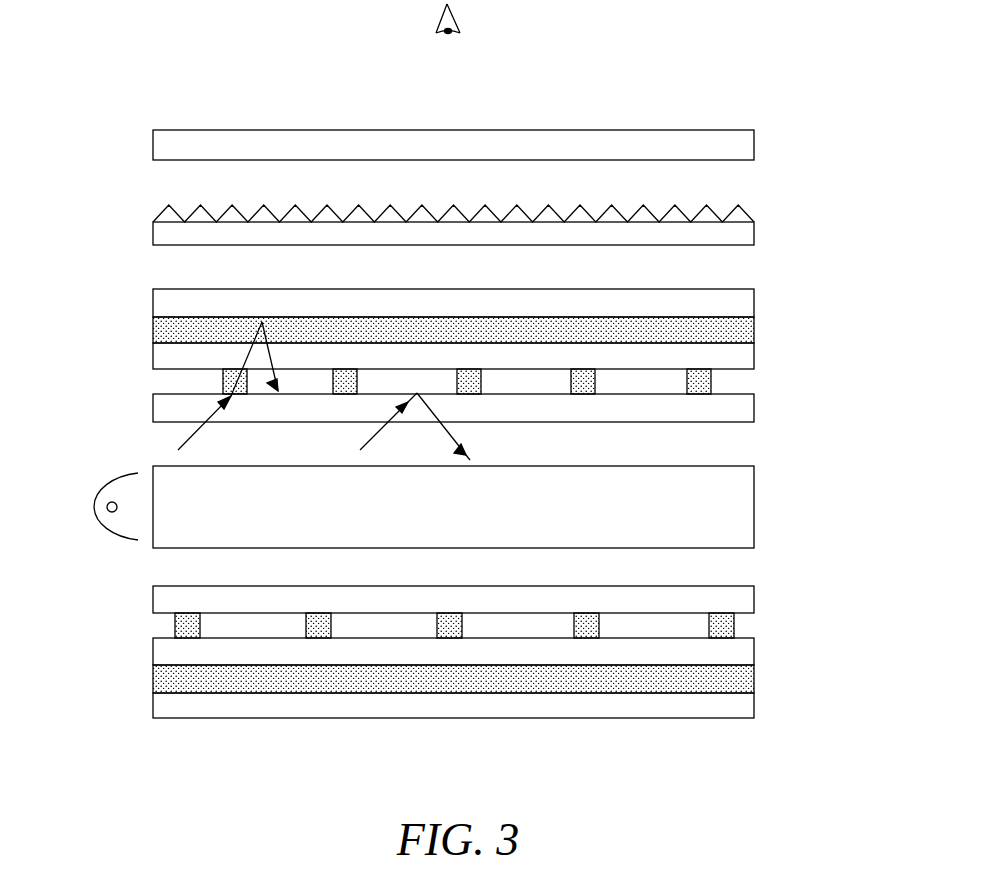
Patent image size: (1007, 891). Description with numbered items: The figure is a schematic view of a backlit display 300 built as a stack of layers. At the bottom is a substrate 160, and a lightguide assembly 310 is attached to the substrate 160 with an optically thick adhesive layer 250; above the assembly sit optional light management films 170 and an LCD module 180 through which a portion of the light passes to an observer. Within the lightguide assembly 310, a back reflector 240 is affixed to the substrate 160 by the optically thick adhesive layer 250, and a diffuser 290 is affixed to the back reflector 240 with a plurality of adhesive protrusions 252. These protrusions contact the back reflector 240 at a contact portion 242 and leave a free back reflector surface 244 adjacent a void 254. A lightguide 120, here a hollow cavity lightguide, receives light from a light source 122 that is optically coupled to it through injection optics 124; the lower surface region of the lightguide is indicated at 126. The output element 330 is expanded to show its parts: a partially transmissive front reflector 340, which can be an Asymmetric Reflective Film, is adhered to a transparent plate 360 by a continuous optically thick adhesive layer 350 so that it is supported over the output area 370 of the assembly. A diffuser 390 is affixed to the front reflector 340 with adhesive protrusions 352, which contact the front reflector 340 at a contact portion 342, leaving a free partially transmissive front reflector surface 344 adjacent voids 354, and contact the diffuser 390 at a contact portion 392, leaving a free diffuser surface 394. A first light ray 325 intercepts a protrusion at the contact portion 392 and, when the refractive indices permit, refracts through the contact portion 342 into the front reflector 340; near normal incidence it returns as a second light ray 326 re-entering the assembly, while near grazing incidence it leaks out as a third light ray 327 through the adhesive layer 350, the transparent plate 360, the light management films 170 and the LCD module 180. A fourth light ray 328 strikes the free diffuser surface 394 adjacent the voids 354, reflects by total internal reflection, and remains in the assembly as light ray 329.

The backlit display 300 is at (176, 84).
The LCD module 180 is at (755, 141).
The light management films 170 is at (755, 235).
The lightguide assembly 310 is at (815, 280).
The output element 330 is at (448, 357).
The transparent plate 360 is at (755, 298).
The optically thick adhesive layer 350 is at (755, 328).
The partially transmissive front reflector 340 is at (755, 357).
The diffuser 390 is at (755, 405).
The output area 370 is at (663, 288).
The free partially transmissive front reflector surface 344 is at (404, 369).
The contact portion 342 is at (471, 369).
The voids 354 is at (528, 382).
The adhesive protrusions 352 is at (588, 379).
The contact portion 392 is at (696, 396).
The free diffuser surface 394 is at (637, 396).
The third light ray 327 is at (262, 321).
The second light ray 326 is at (255, 363).
The first light ray 325 is at (195, 439).
The fourth light ray 328 is at (368, 447).
The light ray 329 is at (455, 440).
The lightguide 120 is at (170, 473).
The light source 122 is at (108, 502).
The injection optics 124 is at (97, 530).
The bottom surface of light guide 126 is at (177, 563).
The diffuser 290 is at (153, 599).
The back reflector 240 is at (153, 654).
The optically thick adhesive layer 250 is at (153, 684).
The substrate 160 is at (153, 714).
The adhesive protrusions 252 is at (317, 625).
The void 254 is at (385, 628).
The contact portion 242 is at (448, 635).
The free back reflector surface 244 is at (518, 640).